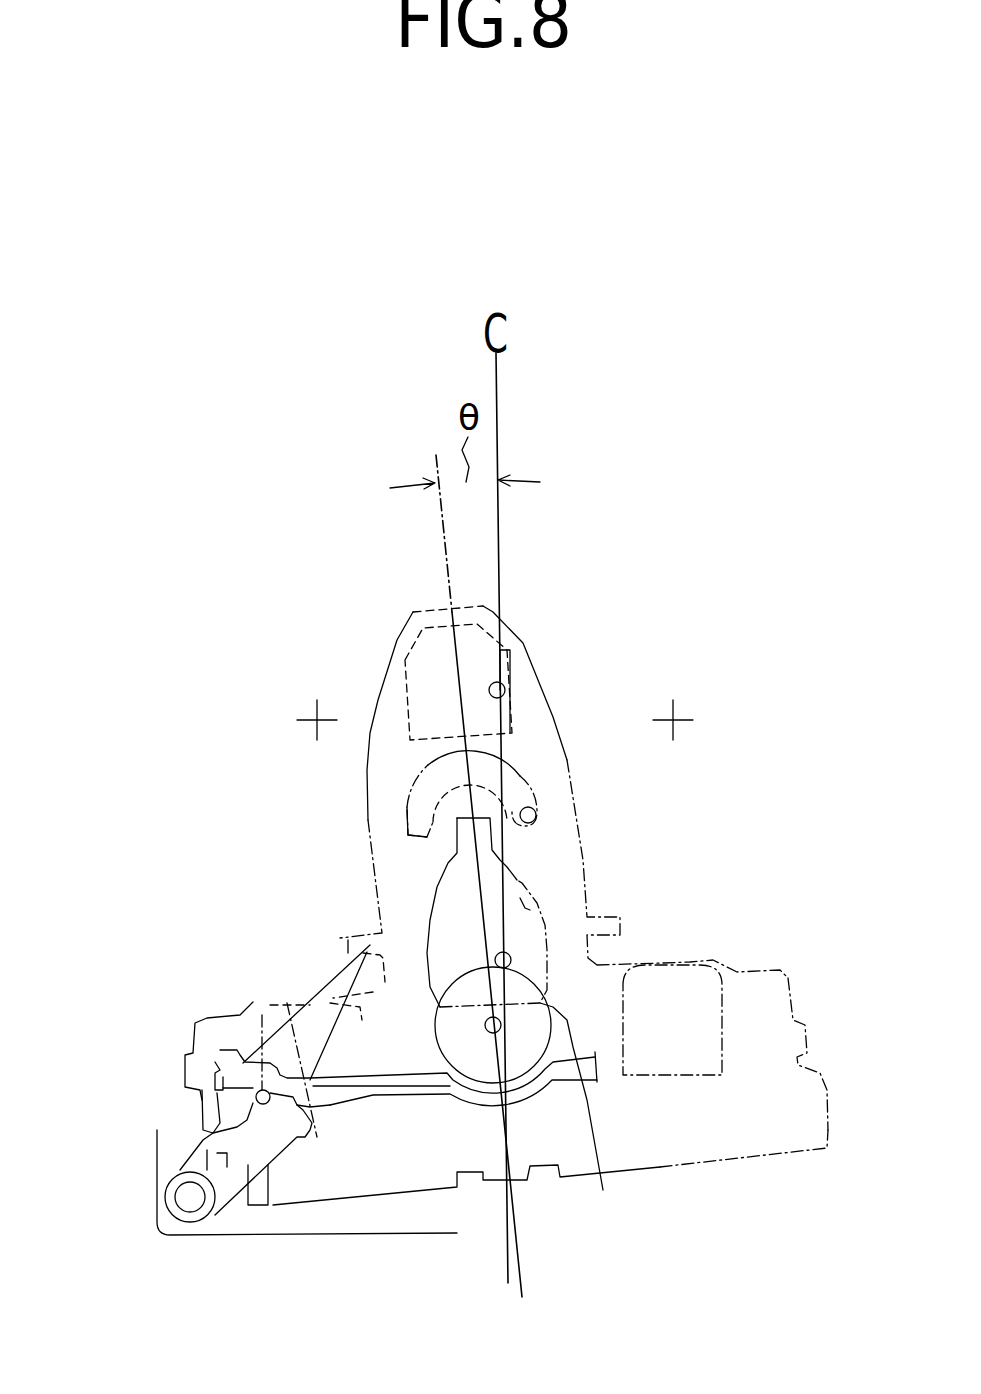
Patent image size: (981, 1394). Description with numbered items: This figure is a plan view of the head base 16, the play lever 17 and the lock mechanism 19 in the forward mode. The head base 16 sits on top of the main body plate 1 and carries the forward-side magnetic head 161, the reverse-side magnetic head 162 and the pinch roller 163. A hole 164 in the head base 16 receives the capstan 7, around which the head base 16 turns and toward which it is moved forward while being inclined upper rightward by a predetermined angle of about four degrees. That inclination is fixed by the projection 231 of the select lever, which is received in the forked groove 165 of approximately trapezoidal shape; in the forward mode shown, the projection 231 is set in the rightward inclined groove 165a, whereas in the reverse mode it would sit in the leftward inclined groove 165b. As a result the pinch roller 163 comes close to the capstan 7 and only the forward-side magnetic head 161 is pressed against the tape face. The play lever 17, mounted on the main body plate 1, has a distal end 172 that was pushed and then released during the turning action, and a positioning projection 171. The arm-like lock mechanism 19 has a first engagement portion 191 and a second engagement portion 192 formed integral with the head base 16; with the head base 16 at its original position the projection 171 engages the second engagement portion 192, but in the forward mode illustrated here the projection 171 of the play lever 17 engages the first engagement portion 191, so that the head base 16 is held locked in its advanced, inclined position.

The main body plate 1 is at (250, 1237).
The capstan 7 is at (512, 955).
The head base 16 is at (583, 860).
The forward-side magnetic head 161 is at (656, 962).
The reverse-side magnetic head 162 is at (297, 1000).
The pinch roller 163 is at (550, 1106).
The hole 164 is at (520, 898).
The forked groove 165 is at (430, 766).
The rightward inclined groove 165a is at (510, 795).
The leftward inclined groove 165b is at (407, 807).
The play lever 17 is at (283, 1037).
The positioning projection 171 is at (185, 1145).
The distal end 172 is at (347, 940).
The lock mechanism 19 is at (398, 1087).
The first engagement portion 191 is at (256, 1097).
The second engagement portion 192 is at (317, 1137).
The projection 231 is at (536, 808).